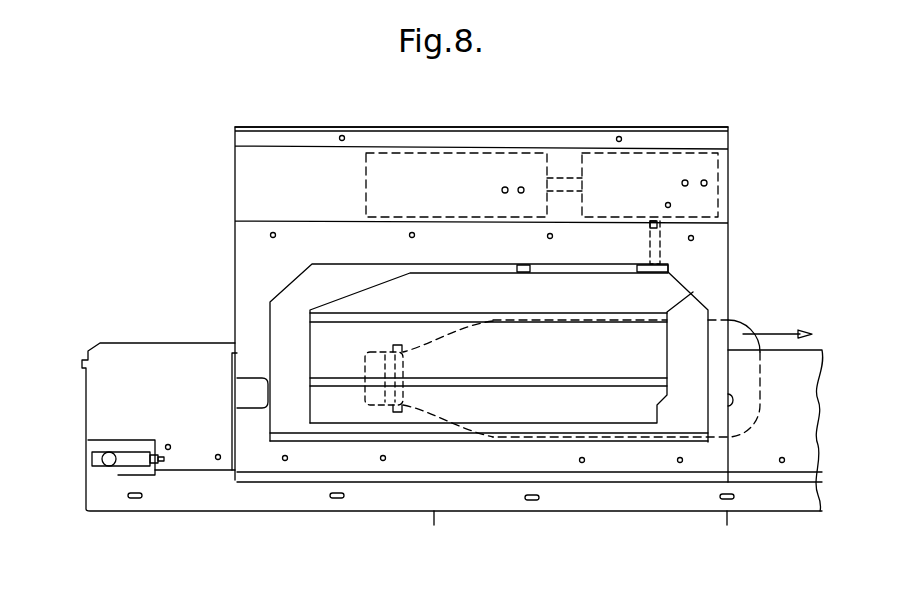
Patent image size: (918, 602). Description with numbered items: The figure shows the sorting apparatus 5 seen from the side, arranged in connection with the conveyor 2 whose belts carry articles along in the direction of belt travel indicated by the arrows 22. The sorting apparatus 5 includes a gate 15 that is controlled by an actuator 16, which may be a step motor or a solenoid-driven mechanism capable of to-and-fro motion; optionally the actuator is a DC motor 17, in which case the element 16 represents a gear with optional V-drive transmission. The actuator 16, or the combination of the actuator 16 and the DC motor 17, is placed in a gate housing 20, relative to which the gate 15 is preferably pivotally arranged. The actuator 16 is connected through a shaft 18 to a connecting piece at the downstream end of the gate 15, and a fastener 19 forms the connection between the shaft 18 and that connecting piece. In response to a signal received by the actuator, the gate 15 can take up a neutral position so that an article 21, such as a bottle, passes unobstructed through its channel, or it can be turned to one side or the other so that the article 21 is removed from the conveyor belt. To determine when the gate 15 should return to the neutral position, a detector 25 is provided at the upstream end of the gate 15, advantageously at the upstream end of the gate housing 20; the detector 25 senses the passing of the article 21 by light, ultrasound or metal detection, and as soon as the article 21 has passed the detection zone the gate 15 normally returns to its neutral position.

The conveyor 2 is at (200, 452).
The sorting apparatus 5 is at (312, 122).
The gate 15 is at (300, 288).
The actuator 16 is at (642, 170).
The DC motor 17 is at (436, 170).
The shaft 18 is at (650, 243).
The fastener 19 is at (665, 265).
The gate housing 20 is at (728, 165).
The article 21 is at (740, 325).
The arrows 22 is at (778, 330).
The detector 25 is at (253, 397).